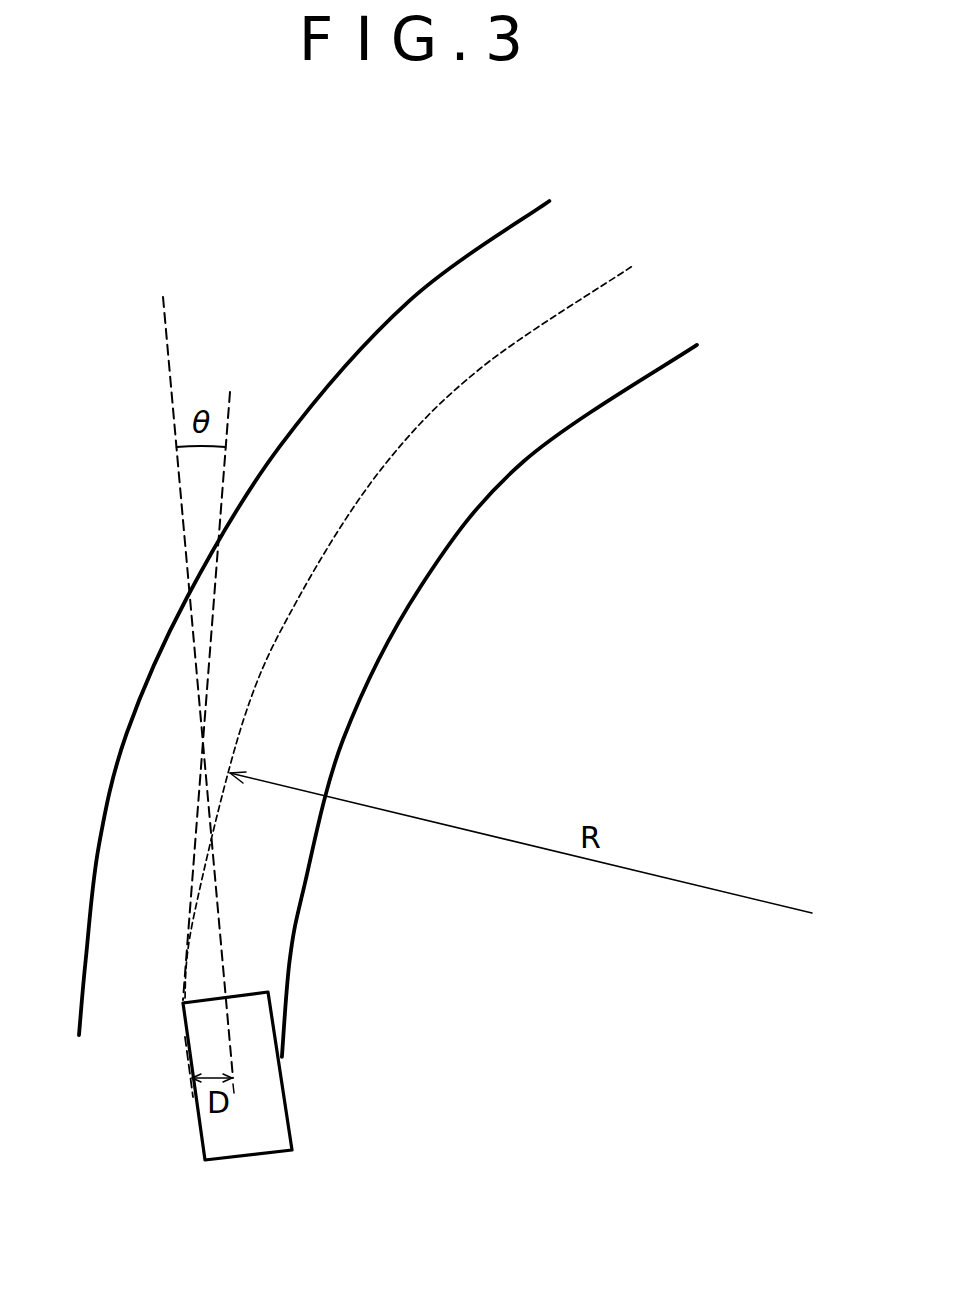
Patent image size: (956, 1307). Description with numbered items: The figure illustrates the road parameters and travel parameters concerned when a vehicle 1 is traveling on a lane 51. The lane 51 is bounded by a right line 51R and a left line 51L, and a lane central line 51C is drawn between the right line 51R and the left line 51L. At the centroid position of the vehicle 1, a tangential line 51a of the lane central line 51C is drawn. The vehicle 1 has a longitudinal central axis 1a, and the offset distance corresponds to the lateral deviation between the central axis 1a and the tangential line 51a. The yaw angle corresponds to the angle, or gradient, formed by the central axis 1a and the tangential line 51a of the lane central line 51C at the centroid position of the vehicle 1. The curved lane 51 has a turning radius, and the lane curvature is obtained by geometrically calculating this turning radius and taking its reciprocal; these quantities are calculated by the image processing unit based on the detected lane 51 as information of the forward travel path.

The vehicle 1 is at (288, 1107).
The longitudinal central axis 1a is at (168, 362).
The lane 51 is at (404, 617).
The left line 51L is at (447, 267).
The right line 51R is at (630, 381).
The lane central line 51C is at (600, 282).
The tangential line 51a is at (232, 405).